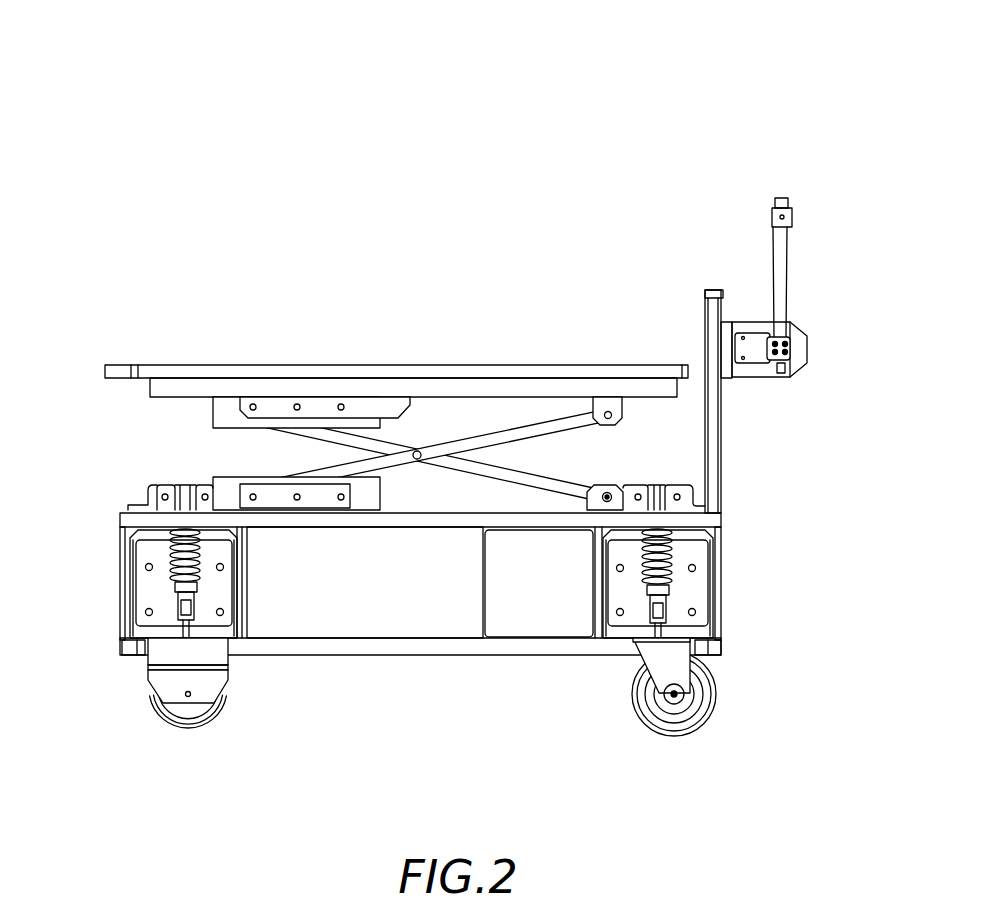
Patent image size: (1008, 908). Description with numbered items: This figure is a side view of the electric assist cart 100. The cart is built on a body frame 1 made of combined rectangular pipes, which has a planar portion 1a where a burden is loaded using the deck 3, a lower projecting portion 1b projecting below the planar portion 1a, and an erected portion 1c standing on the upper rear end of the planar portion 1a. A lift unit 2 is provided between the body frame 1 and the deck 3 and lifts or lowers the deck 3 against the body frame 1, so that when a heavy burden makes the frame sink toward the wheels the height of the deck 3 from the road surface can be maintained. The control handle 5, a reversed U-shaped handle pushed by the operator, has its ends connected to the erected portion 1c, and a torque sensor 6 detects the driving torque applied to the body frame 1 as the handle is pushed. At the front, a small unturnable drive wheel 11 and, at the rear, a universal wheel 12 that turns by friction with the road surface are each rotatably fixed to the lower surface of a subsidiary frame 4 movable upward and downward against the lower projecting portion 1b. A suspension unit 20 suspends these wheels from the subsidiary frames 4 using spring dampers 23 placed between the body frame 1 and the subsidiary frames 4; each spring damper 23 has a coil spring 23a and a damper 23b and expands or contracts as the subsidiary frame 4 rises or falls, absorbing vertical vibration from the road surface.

The electric assist cart 100 is at (806, 108).
The body frame 1 is at (483, 475).
The planar portion 1a is at (715, 522).
The lower projecting portion 1b is at (717, 600).
The erected portion 1c is at (713, 450).
The lift unit 2 is at (440, 420).
The deck 3 is at (158, 365).
The subsidiary frame 4 is at (210, 617).
The control handle 5 is at (790, 204).
The torque sensor 6 is at (797, 349).
The drive wheel 11 is at (187, 722).
The universal wheel 12 is at (675, 730).
The suspension unit 20 is at (130, 664).
The spring damper 23 is at (388, 661).
The coil spring 23a is at (190, 570).
The damper 23b is at (190, 590).